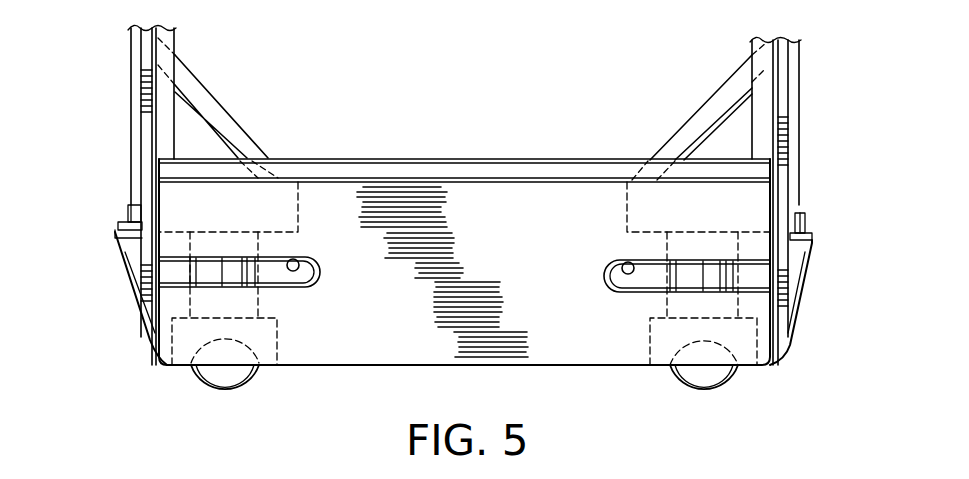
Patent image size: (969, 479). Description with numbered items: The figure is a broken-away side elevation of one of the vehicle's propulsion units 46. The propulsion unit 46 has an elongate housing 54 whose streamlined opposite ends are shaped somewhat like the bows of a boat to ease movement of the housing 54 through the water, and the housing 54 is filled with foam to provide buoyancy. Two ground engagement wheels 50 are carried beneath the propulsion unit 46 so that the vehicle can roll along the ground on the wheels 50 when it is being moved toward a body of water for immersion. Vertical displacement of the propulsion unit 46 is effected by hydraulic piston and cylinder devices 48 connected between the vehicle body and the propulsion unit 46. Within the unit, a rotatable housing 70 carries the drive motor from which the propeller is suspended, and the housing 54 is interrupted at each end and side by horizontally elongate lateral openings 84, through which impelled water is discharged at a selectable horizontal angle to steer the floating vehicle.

The propulsion unit 46 is at (413, 368).
The hydraulic piston and cylinder device 48 is at (131, 92).
The ground engagement wheel 50 is at (212, 385).
The elongate housing 54 is at (526, 200).
The rotatable housing 70 is at (235, 282).
The lateral opening 84 is at (296, 262).